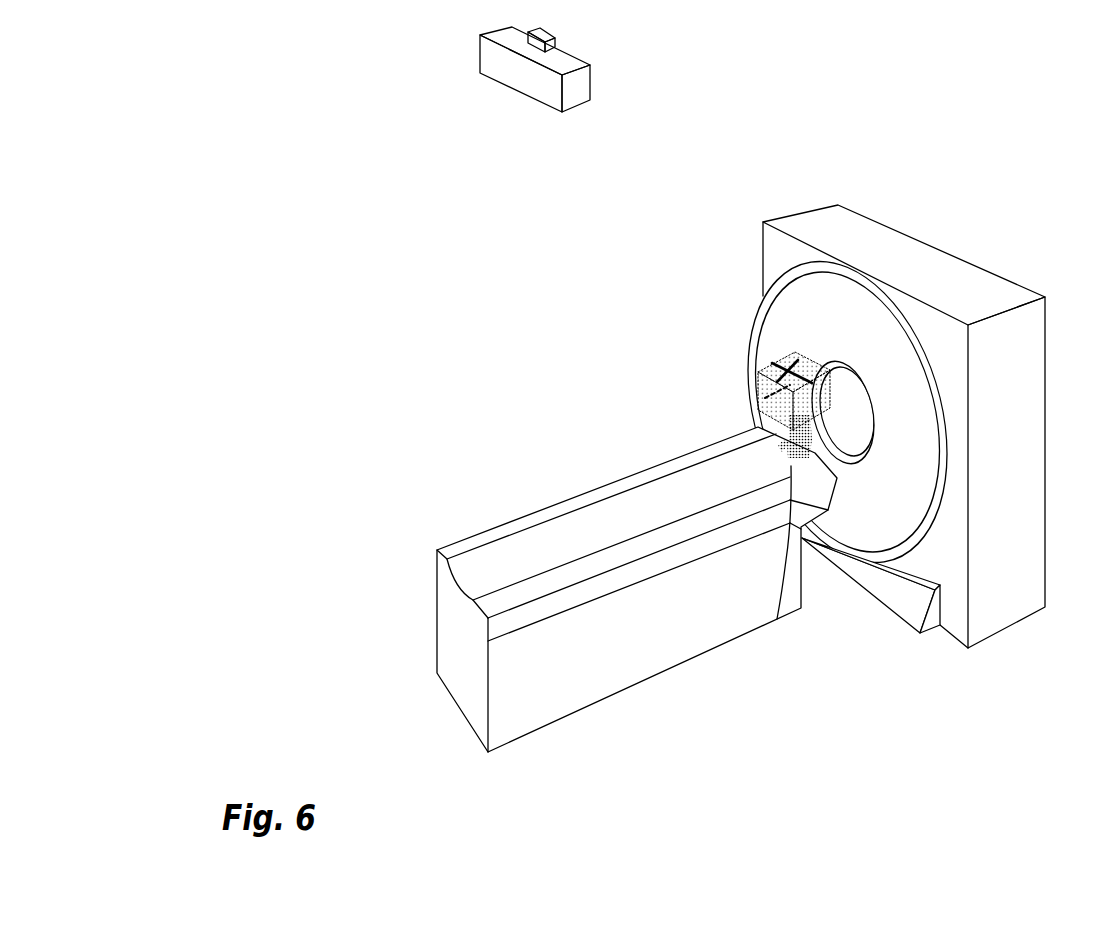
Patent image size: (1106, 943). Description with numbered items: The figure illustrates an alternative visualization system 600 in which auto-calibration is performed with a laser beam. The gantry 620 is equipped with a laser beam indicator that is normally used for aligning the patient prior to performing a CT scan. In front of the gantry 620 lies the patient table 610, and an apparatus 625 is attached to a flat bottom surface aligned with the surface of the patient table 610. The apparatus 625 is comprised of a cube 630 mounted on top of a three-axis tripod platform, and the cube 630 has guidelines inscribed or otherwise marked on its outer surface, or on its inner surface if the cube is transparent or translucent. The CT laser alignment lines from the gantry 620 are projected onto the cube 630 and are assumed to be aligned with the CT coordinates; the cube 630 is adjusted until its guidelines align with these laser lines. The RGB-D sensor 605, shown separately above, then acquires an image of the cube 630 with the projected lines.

The visualization system 600 is at (1036, 87).
The RGB-D sensor 605 is at (478, 58).
The patient table 610 is at (433, 590).
The gantry 620 is at (937, 248).
The apparatus 625 is at (790, 455).
The cube 630 is at (793, 353).